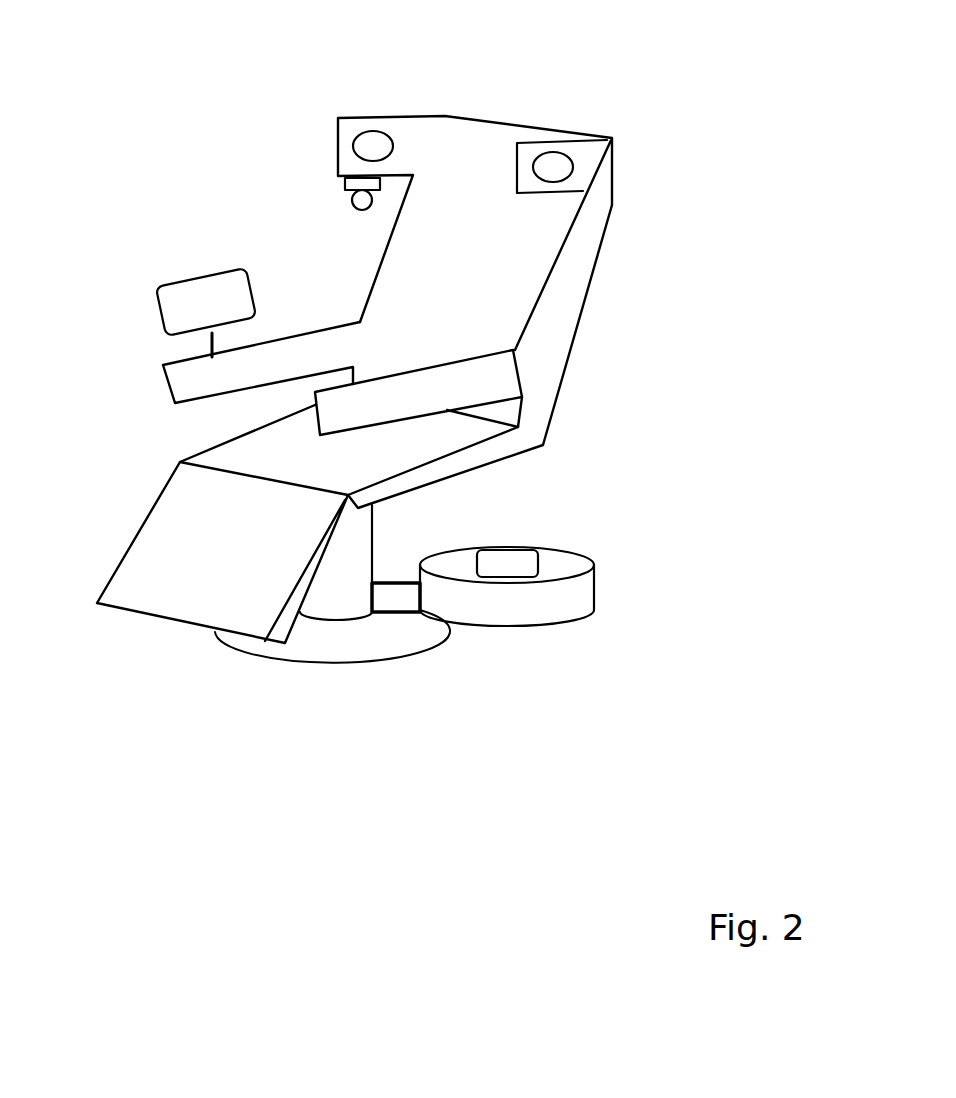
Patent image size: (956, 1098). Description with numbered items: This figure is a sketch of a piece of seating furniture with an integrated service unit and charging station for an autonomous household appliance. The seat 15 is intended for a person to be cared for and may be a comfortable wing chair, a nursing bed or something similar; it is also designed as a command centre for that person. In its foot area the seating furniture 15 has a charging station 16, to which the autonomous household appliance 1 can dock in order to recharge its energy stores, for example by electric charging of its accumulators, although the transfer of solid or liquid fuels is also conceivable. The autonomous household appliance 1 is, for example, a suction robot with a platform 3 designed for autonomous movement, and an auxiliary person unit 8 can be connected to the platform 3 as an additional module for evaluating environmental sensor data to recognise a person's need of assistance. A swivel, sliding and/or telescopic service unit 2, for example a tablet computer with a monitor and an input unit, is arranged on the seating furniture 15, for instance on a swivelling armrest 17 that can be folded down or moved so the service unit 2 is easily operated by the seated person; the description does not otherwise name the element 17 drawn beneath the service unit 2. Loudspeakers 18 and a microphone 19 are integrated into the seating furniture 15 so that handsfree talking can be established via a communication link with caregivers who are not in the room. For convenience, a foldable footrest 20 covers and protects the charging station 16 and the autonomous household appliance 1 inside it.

The autonomous household appliance 1 is at (510, 632).
The service unit 2 is at (187, 278).
The platform 3 is at (572, 610).
The auxiliary person unit 8 is at (510, 562).
The seat 15 is at (452, 114).
The charging station 16 is at (397, 607).
The support arm 17 is at (163, 388).
The loudspeakers 18 is at (373, 144).
The microphone 19 is at (344, 188).
The foldable footrest 20 is at (148, 523).